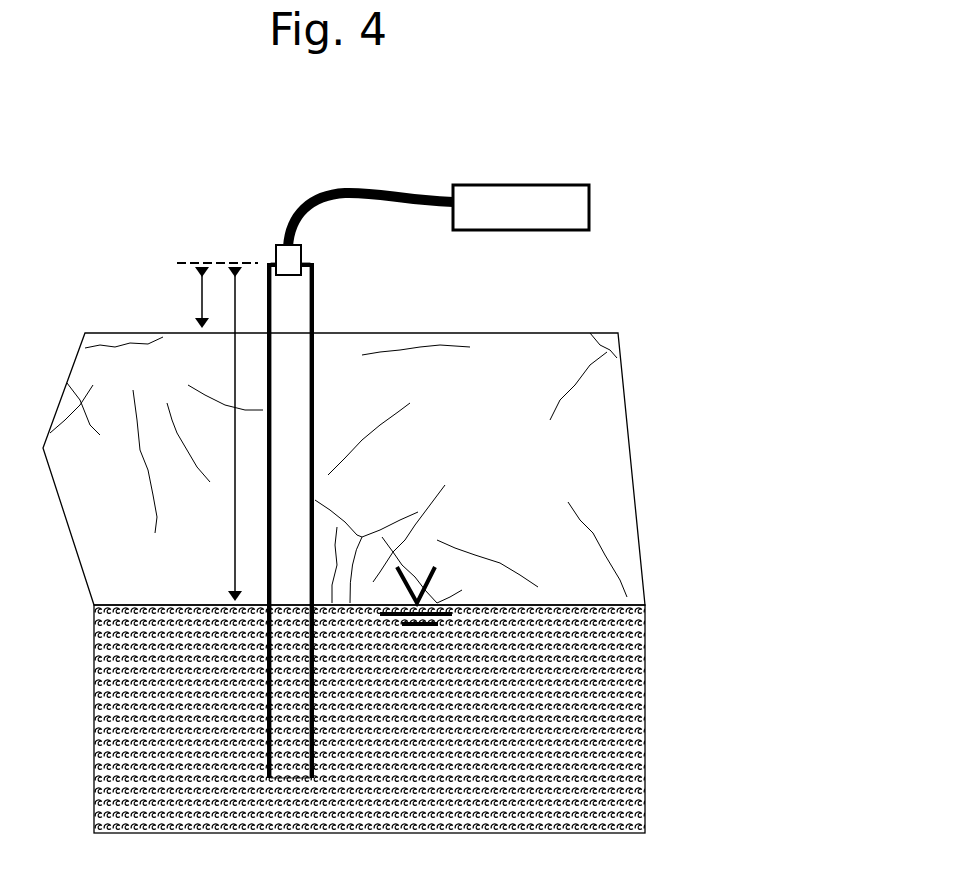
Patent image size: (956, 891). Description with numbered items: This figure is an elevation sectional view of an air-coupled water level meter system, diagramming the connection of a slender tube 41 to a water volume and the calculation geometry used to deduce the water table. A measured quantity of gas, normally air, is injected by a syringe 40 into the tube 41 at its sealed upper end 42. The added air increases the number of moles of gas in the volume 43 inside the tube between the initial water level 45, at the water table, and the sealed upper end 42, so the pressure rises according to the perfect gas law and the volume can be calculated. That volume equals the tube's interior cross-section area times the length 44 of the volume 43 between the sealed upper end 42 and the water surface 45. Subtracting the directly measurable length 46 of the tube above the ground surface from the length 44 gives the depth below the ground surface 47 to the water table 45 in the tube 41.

The syringe 40 is at (521, 207).
The tube 41 is at (317, 285).
The sealed upper end 42 is at (283, 250).
The volume 43 is at (292, 345).
The length of the volume 44 is at (235, 415).
The water level 45 is at (540, 604).
The length of the tube above the ground surface 46 is at (202, 300).
The ground surface 47 is at (522, 332).